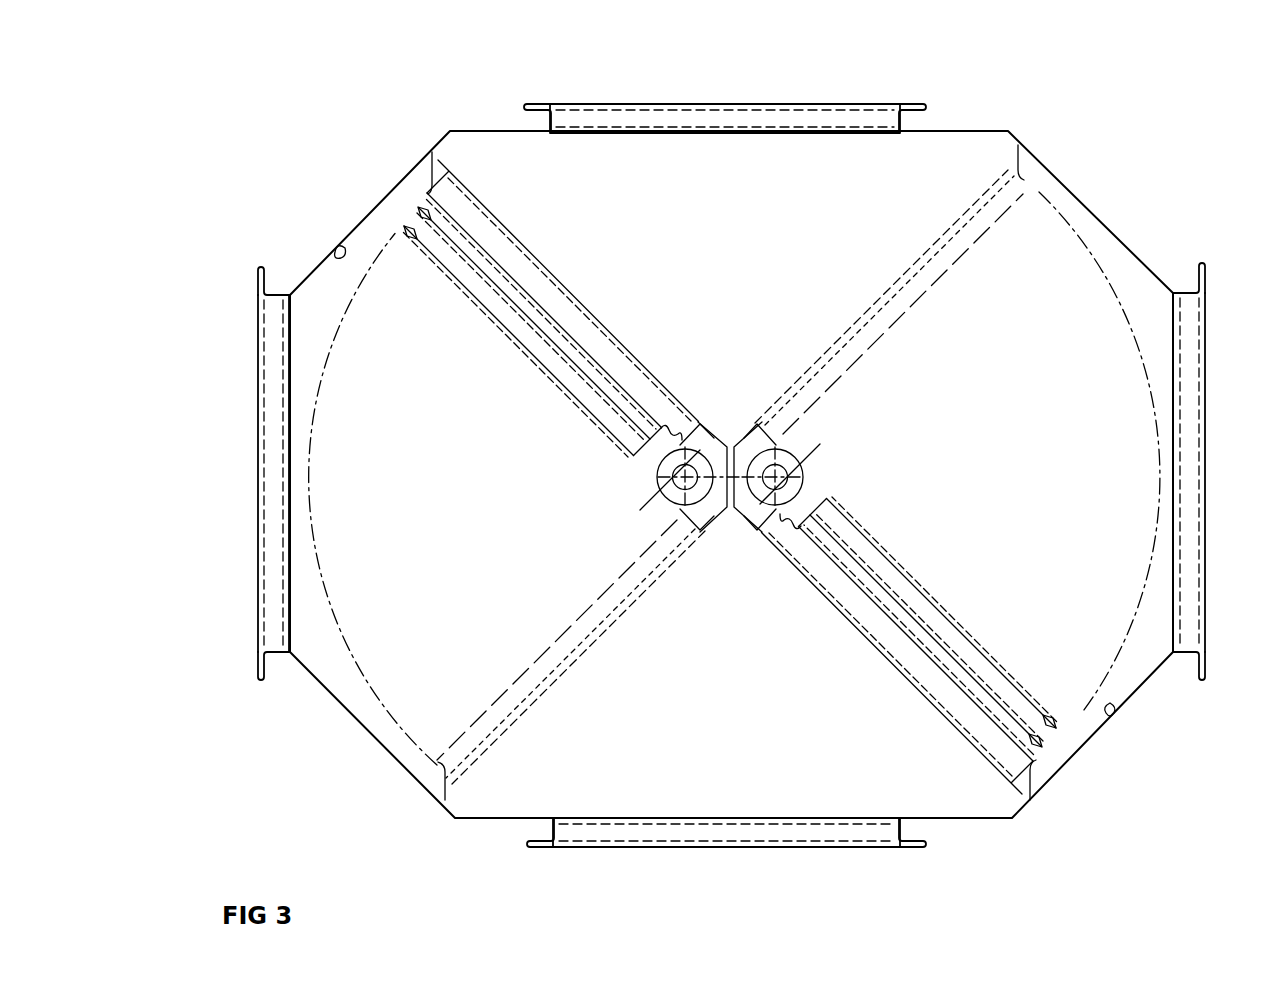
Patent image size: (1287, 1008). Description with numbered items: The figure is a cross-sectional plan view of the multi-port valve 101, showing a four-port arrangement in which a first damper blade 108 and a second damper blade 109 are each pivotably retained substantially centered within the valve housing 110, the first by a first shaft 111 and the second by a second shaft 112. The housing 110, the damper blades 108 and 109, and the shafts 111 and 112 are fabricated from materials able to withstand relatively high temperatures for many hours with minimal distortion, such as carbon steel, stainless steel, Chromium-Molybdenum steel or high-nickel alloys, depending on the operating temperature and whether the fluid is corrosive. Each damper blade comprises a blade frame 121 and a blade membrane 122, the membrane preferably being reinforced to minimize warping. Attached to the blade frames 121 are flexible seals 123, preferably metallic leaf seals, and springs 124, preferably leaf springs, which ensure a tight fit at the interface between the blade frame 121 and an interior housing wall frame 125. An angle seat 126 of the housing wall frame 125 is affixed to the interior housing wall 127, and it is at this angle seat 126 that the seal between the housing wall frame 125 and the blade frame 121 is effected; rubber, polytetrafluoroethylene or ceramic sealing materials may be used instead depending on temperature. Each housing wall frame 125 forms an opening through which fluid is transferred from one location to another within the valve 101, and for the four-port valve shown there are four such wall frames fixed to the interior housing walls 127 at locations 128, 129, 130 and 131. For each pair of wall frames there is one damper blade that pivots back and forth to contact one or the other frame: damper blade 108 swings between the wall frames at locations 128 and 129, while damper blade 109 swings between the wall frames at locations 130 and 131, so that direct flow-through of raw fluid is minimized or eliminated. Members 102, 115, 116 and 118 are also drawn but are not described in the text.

The valve 101 is at (343, 84).
The bottom frame member 102 is at (763, 820).
The first damper blade 108 is at (523, 347).
The second damper blade 109 is at (940, 612).
The valve housing 110 is at (982, 128).
The first shaft 111 is at (668, 490).
The second shaft 112 is at (797, 475).
The left frame member 115 is at (270, 448).
The right frame member 116 is at (1193, 478).
The top frame member 118 is at (692, 110).
The blade frame 121 is at (588, 352).
The blade membrane 122 is at (585, 378).
The flexible seal 123 is at (420, 230).
The spring 124 is at (1112, 720).
The interior housing wall frame 125 is at (531, 258).
The angle seat 126 is at (437, 162).
The interior housing wall 127 is at (336, 257).
The location of housing wall frame 128 is at (498, 218).
The location of housing wall frame 129 is at (540, 657).
The location of housing wall frame 130 is at (998, 668).
The location of housing wall frame 131 is at (936, 282).